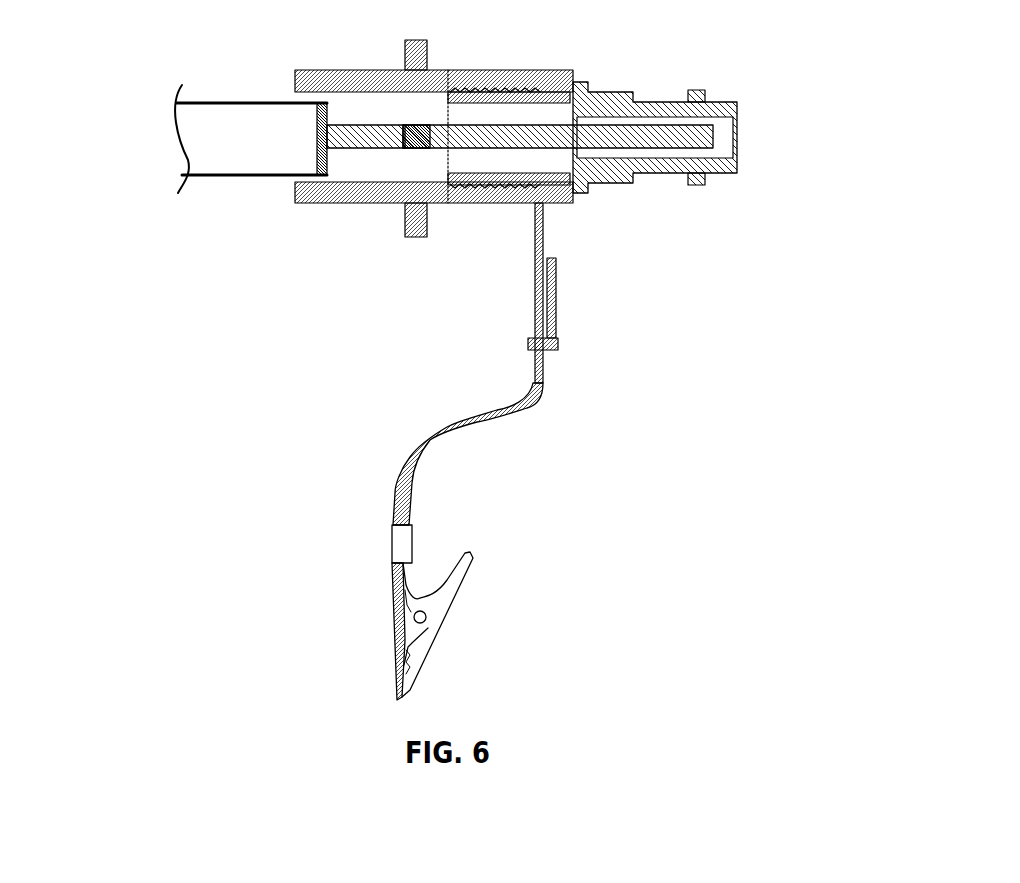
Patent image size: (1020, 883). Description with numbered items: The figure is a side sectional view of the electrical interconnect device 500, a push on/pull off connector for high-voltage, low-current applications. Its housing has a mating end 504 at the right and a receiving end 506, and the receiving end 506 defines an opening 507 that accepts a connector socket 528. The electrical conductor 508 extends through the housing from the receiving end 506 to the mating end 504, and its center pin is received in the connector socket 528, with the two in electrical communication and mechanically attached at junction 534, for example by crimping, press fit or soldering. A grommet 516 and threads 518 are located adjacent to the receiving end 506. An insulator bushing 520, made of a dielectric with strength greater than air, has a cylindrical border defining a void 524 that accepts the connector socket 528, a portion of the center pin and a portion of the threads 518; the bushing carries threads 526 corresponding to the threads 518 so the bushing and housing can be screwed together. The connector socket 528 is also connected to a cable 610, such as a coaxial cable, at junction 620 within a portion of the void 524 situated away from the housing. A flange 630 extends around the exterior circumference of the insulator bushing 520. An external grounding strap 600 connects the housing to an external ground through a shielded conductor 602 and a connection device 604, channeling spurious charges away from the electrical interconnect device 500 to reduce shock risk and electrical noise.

The electrical interconnect device 500 is at (166, 40).
The mating end 504 is at (762, 140).
The receiving end 506 is at (440, 158).
The opening 507 is at (457, 118).
The electrical conductor 508 is at (637, 135).
The grommet 516 is at (541, 80).
The threads 518 is at (503, 187).
The insulator bushing 520 is at (313, 78).
The void 524 is at (370, 167).
The threads 526 is at (484, 83).
The connector socket 528 is at (363, 137).
The junction 534 is at (403, 148).
The external grounding strap 600 is at (543, 235).
The shielded conductor 602 is at (540, 393).
The connection device 604 is at (470, 553).
The cable 610 is at (232, 160).
The junction 620 is at (315, 140).
The flange 630 is at (415, 227).